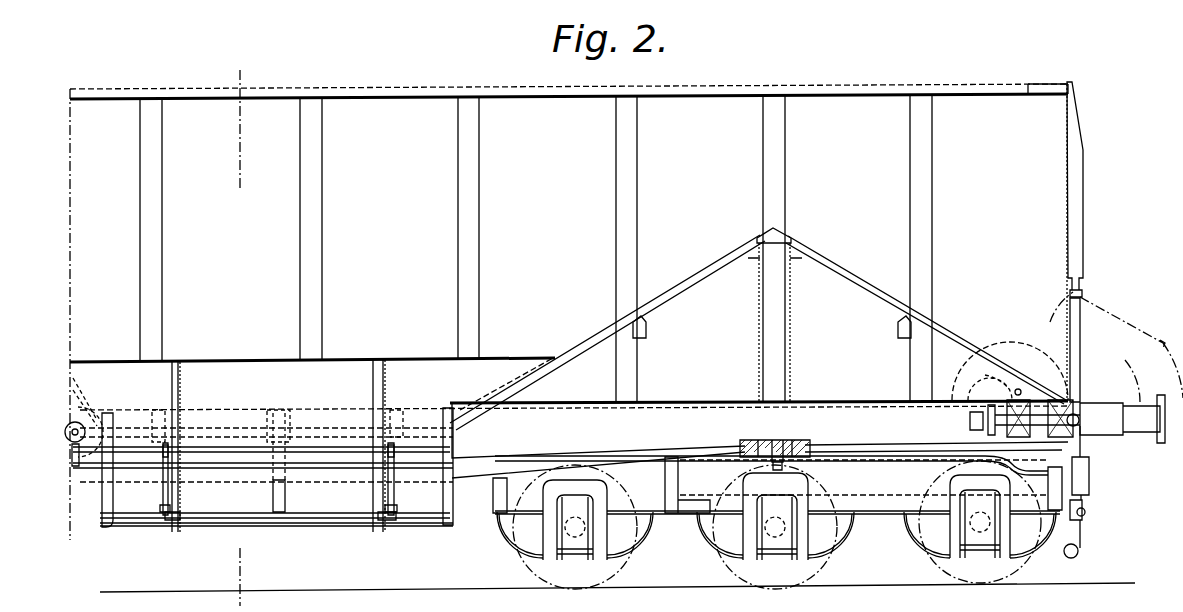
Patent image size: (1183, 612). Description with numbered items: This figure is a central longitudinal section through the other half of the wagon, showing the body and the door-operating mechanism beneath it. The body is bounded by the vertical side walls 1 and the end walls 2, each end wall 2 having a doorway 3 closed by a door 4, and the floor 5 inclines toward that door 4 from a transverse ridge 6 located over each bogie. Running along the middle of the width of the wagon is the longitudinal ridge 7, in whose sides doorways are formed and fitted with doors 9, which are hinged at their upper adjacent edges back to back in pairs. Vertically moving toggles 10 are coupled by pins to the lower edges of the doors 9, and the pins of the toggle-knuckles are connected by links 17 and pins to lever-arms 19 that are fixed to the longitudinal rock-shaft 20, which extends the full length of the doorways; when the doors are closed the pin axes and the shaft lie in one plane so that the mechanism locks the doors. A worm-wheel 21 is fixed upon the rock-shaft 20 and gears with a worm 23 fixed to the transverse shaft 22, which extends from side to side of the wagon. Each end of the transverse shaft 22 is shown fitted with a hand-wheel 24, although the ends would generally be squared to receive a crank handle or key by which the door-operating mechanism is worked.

The vertical side wall 1 is at (569, 312).
The end wall 2 is at (1060, 191).
The doorway 3 is at (1066, 386).
The door 4 is at (1112, 312).
The floor 5 is at (888, 293).
The transverse ridge 6 is at (790, 238).
The longitudinal ridge 7 is at (226, 361).
The door 9 is at (266, 446).
The toggle 10 is at (392, 520).
The link 17 is at (396, 508).
The lever-arm 19 is at (396, 473).
The longitudinal rock-shaft 20 is at (315, 450).
The worm-wheel 21 is at (73, 467).
The transverse shaft 22 is at (72, 450).
The worm 23 is at (66, 431).
The hand-wheel 24 is at (78, 412).